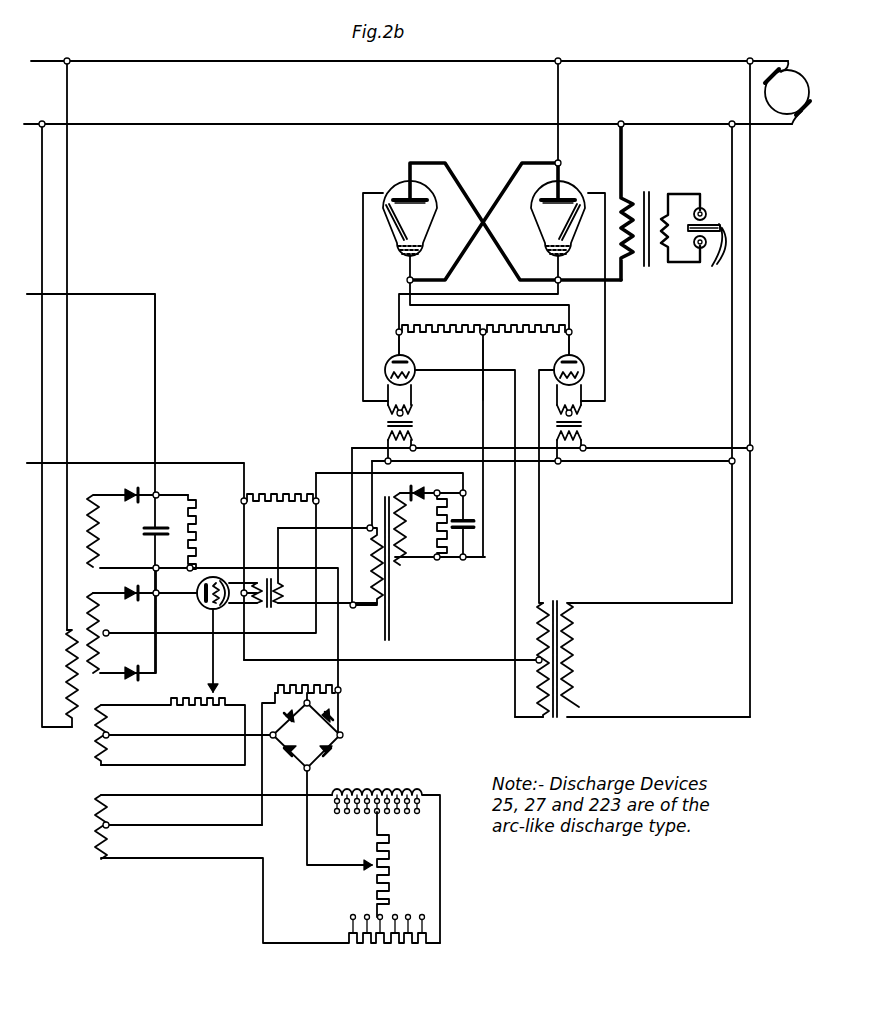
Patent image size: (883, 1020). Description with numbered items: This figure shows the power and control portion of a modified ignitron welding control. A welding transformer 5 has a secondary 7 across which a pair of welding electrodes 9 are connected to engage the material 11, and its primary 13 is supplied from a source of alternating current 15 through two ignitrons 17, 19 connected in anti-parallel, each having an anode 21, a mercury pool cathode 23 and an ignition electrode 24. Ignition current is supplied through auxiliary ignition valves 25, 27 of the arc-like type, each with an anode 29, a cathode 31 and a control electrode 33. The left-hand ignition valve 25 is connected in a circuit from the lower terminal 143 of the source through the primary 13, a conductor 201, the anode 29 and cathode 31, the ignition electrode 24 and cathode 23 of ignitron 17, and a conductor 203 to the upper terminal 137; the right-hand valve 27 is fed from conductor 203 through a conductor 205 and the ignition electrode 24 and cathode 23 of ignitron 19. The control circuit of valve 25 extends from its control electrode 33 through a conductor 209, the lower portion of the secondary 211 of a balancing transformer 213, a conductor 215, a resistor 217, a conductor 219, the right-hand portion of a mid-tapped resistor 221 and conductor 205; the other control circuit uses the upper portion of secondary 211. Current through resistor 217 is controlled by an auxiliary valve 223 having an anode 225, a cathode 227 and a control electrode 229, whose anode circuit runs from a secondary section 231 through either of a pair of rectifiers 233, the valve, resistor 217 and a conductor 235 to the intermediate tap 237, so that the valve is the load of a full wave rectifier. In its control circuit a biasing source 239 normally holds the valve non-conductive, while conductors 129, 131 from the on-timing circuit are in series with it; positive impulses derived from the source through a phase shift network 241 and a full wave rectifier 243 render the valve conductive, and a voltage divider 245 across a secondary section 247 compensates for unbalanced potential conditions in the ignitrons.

The welding transformer 5 is at (649, 216).
The secondary 7 is at (664, 250).
The welding electrodes 9 is at (716, 258).
The material 11 is at (689, 222).
The primary 13 is at (616, 205).
The source of alternating current 15 is at (800, 51).
The ignitron 17 is at (395, 180).
The ignitron 19 is at (535, 222).
The anode 21 is at (420, 199).
The mercury pool cathode 23 is at (420, 250).
The ignition electrode 24 is at (406, 240).
The ignition valve 25 is at (384, 362).
The ignition valve 27 is at (586, 363).
The anode 29 is at (398, 350).
The cathode 31 is at (411, 380).
The control electrode 33 is at (412, 364).
The conductor 129 is at (102, 462).
The conductor 131 is at (156, 404).
The upper terminal 137 is at (773, 70).
The lower terminal 143 is at (803, 112).
The conductor 201 is at (558, 292).
The conductor 203 is at (482, 201).
The conductor 205 is at (490, 304).
The conductor 209 is at (541, 521).
The secondary 211 is at (546, 601).
The balancing transformer 213 is at (561, 601).
The conductor 215 is at (416, 663).
The resistor 217 is at (272, 494).
The conductor 219 is at (482, 412).
The mid-tapped resistor 221 is at (470, 330).
The auxiliary valve 223 is at (212, 577).
The anode 225 is at (200, 598).
The cathode 227 is at (222, 606).
The control electrode 229 is at (216, 582).
The secondary section 231 is at (121, 620).
The rectifiers 233 is at (138, 592).
The conductor 235 is at (290, 645).
The intermediate tap 237 is at (108, 633).
The biasing source 239 is at (141, 528).
The phase shift network 241 is at (366, 866).
The full wave rectifier 243 is at (308, 726).
The voltage divider 245 is at (185, 700).
The secondary section 247 is at (92, 740).